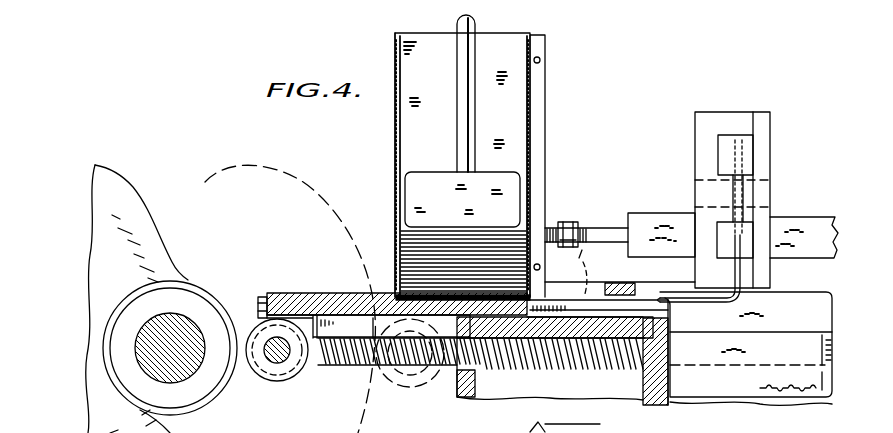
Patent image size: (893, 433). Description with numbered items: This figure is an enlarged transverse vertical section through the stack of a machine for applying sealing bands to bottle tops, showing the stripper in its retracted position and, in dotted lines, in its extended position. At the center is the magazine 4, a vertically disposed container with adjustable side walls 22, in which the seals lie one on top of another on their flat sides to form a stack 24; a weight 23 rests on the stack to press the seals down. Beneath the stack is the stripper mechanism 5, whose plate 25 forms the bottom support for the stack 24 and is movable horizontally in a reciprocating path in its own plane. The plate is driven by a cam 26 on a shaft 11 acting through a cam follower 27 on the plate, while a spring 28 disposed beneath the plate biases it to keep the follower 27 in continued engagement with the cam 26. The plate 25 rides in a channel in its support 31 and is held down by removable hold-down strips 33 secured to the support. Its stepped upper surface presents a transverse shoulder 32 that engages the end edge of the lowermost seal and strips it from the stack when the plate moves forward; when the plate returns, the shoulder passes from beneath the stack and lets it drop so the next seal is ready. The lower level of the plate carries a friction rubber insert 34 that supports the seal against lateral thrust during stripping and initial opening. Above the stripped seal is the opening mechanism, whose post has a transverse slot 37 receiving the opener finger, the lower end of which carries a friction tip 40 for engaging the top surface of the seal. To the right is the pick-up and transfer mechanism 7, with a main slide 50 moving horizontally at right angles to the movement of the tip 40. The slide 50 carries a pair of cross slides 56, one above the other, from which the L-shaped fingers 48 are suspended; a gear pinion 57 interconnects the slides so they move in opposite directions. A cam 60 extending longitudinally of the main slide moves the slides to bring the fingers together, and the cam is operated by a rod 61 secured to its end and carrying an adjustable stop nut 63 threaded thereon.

The magazine 4 is at (551, 111).
The stripper mechanism 5 is at (316, 291).
The pick-up and transfer mechanism 7 is at (694, 152).
The shaft 11 is at (182, 314).
The side walls 22 is at (395, 151).
The weight 23 is at (485, 172).
The stack 24 is at (492, 222).
The plate 25 is at (340, 291).
The cam 26 is at (207, 180).
The cam follower 27 is at (277, 383).
The spring 28 is at (352, 368).
The support 31 is at (665, 407).
The transverse shoulder 32 is at (385, 291).
The hold-down strips 33 is at (657, 302).
The friction rubber insert 34 is at (555, 358).
The transverse slot 37 is at (596, 427).
The friction tip 40 is at (617, 282).
The L-shaped fingers 48 is at (708, 303).
The main slide 50 is at (810, 298).
The cross slides 56 is at (745, 232).
The gear pinion 57 is at (695, 184).
The cam 60 is at (801, 217).
The rod 61 is at (600, 226).
The stop nut 63 is at (566, 220).